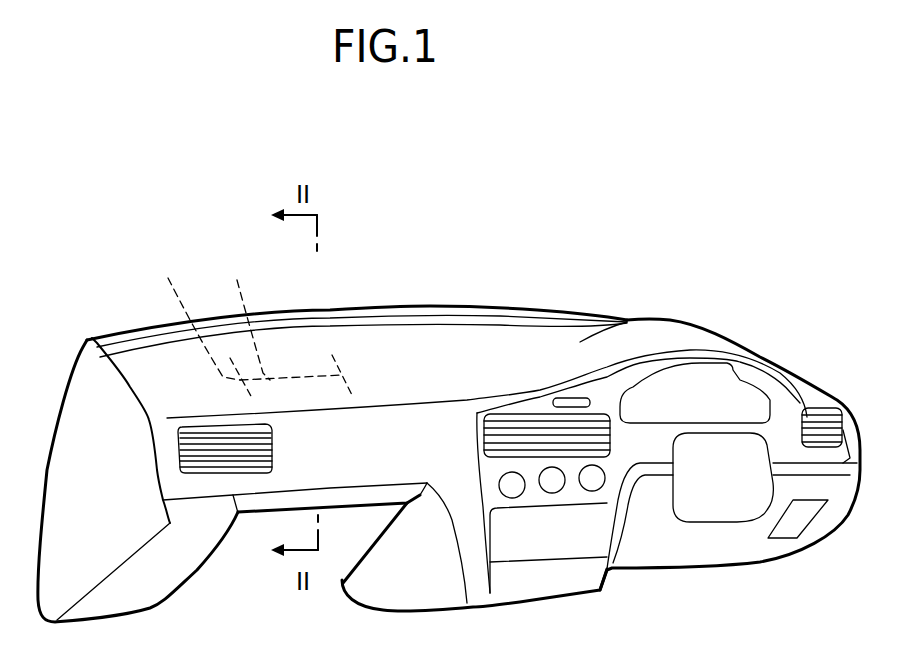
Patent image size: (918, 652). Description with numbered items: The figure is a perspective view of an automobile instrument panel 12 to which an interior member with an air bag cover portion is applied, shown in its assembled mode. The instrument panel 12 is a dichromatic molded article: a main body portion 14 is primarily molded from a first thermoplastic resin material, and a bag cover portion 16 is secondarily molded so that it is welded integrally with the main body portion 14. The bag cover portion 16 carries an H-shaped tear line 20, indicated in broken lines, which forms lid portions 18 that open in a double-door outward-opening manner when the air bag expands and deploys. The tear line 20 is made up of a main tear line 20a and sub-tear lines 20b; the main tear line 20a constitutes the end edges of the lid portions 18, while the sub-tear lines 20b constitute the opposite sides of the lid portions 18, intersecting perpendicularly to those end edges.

The instrument panel 12 is at (518, 246).
The main body portion 14 is at (477, 348).
The bag cover portion 16 is at (343, 374).
The lid portions 18 is at (297, 362).
The tear line 20 is at (201, 285).
The main tear line 20a is at (241, 315).
The sub-tear lines 20b is at (188, 315).